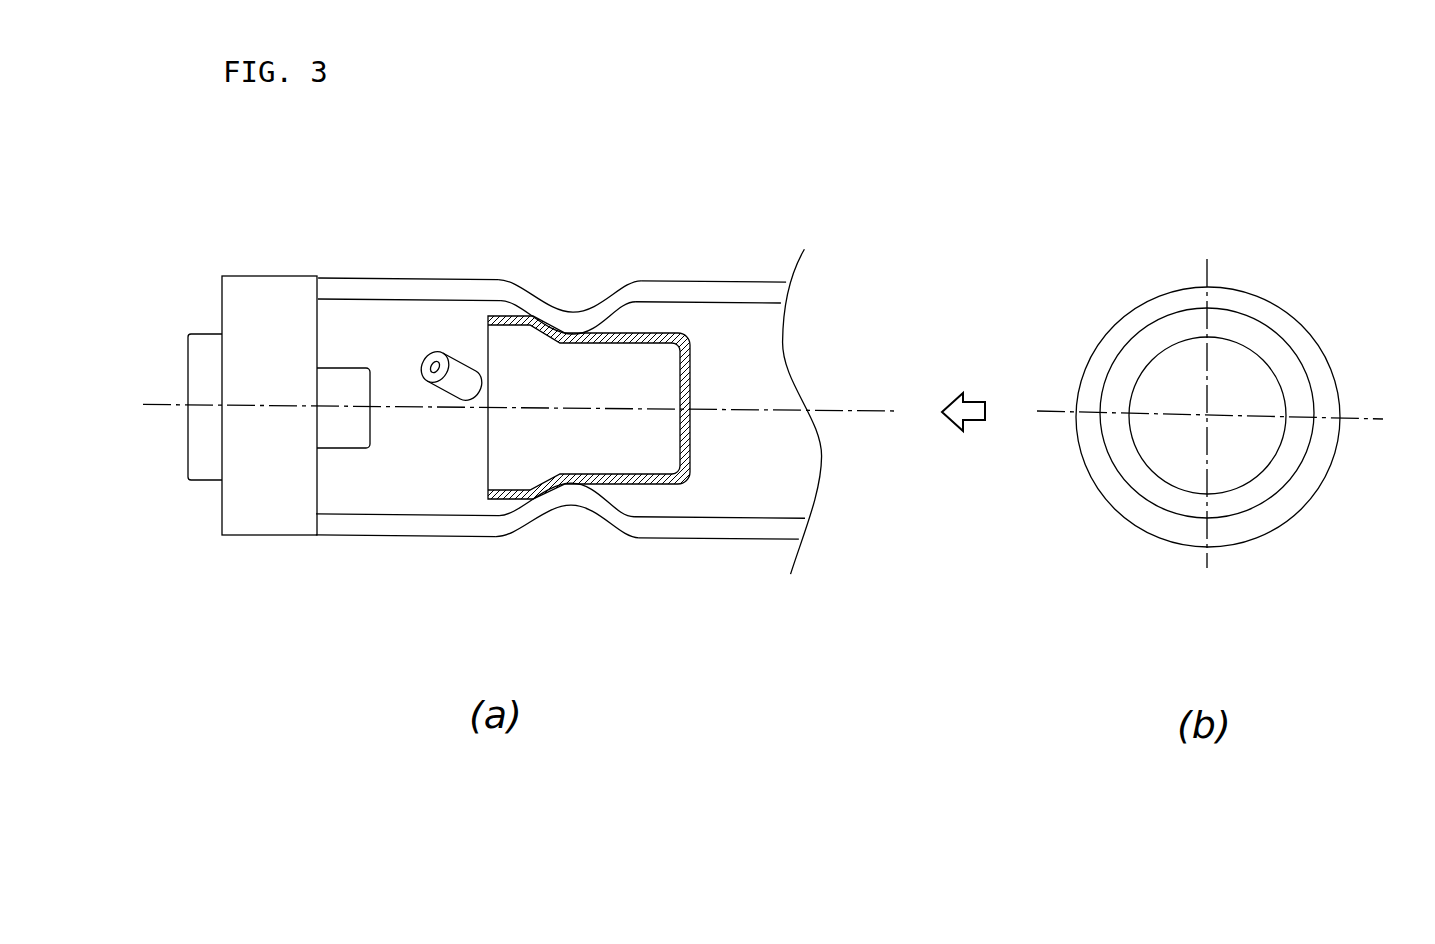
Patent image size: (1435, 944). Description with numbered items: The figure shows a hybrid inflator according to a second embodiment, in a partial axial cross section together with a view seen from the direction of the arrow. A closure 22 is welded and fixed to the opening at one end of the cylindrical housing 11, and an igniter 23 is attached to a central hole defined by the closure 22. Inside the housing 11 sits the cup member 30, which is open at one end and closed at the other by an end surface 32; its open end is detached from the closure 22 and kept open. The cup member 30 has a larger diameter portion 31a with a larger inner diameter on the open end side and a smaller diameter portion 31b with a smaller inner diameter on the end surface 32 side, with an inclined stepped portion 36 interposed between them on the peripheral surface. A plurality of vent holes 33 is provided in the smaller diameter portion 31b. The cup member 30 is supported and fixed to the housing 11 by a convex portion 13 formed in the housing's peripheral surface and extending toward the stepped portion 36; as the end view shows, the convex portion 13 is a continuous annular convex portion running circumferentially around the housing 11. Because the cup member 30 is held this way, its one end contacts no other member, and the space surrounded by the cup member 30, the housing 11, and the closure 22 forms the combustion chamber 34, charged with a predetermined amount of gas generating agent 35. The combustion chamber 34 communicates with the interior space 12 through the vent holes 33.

The cylindrical housing 11 is at (730, 290).
The interior space 12 is at (767, 357).
The convex portion 13 is at (569, 320).
The closure 22 is at (242, 307).
The igniter 23 is at (203, 367).
The cup member 30 is at (698, 475).
The larger diameter portion 31a is at (508, 315).
The smaller diameter portion 31b is at (658, 330).
The end surface 32 is at (692, 437).
The vent holes 33 is at (648, 486).
The combustion chamber 34 is at (404, 355).
The gas generating agent 35 is at (461, 397).
The stepped portion 36 is at (540, 486).